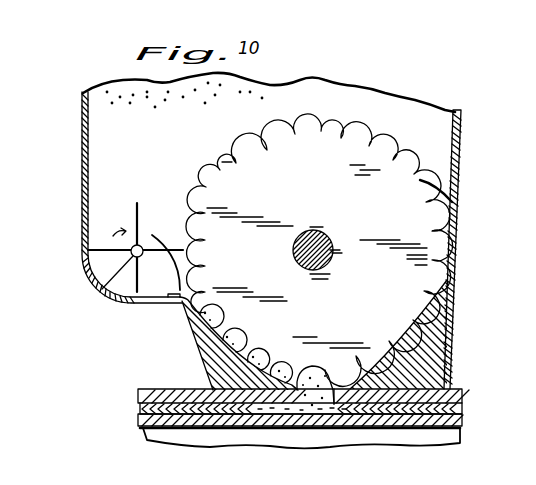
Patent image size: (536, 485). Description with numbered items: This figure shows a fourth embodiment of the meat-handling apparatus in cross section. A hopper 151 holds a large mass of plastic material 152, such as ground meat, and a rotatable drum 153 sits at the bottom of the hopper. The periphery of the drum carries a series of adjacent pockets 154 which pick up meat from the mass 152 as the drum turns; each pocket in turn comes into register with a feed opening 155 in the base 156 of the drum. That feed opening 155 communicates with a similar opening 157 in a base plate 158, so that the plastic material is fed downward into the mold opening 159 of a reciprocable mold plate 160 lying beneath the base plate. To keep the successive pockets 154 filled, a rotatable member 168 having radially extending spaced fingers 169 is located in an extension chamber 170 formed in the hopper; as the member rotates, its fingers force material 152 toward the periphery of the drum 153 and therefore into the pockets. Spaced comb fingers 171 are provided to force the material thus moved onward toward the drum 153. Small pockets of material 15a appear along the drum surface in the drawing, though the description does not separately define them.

The hopper 151 is at (460, 167).
The plastic material 152 is at (267, 97).
The rotatable drum 153 is at (362, 213).
The pockets 154 is at (314, 121).
The feed opening 155 is at (337, 383).
The base 156 is at (423, 365).
The opening 157 is at (322, 398).
The base plate 158 is at (462, 398).
The mold opening 159 is at (256, 405).
The reciprocable mold plate 160 is at (460, 411).
The porous lobes 15a is at (308, 363).
The rotatable member 168 is at (98, 290).
The radially extending spaced fingers 169 is at (142, 225).
The extension chamber 170 is at (125, 305).
The comb fingers 171 is at (168, 258).